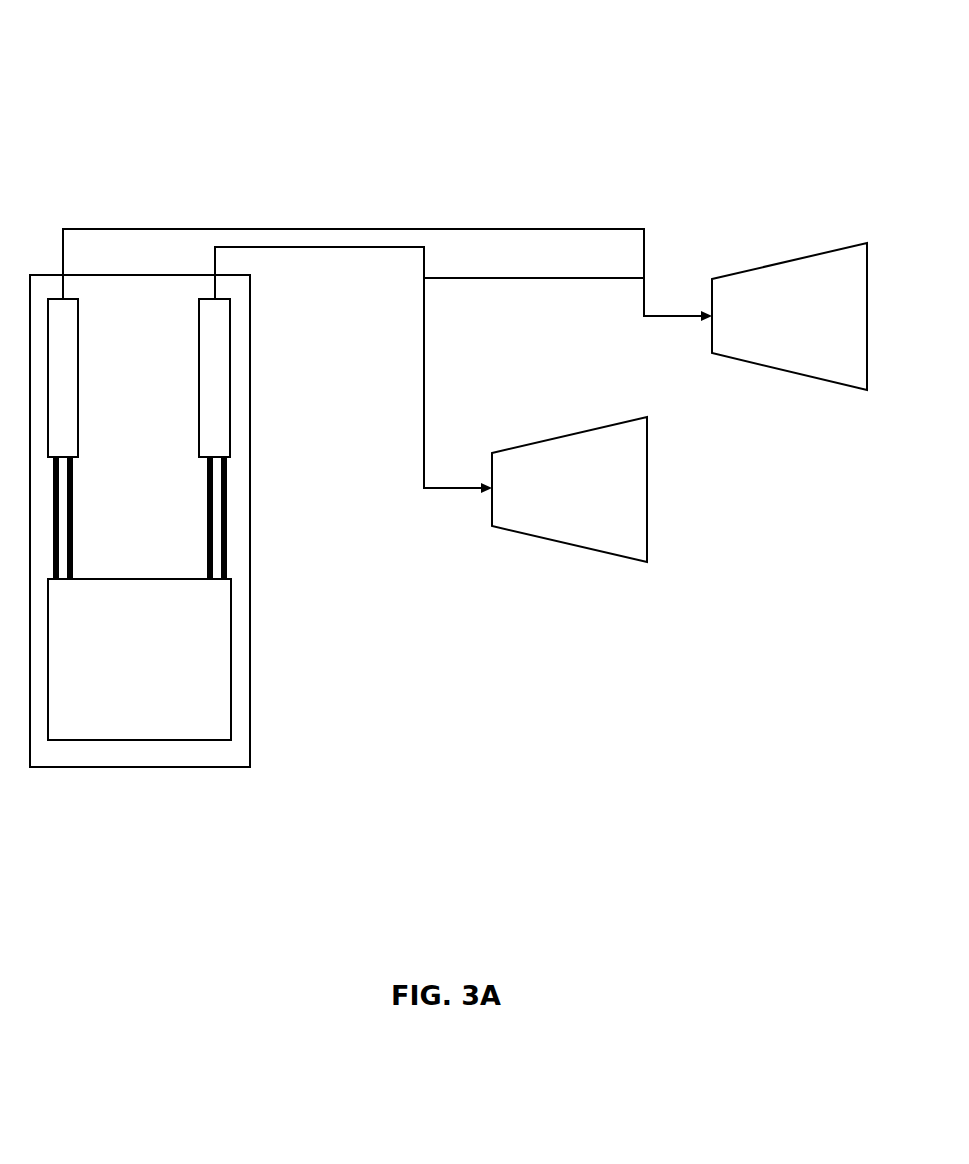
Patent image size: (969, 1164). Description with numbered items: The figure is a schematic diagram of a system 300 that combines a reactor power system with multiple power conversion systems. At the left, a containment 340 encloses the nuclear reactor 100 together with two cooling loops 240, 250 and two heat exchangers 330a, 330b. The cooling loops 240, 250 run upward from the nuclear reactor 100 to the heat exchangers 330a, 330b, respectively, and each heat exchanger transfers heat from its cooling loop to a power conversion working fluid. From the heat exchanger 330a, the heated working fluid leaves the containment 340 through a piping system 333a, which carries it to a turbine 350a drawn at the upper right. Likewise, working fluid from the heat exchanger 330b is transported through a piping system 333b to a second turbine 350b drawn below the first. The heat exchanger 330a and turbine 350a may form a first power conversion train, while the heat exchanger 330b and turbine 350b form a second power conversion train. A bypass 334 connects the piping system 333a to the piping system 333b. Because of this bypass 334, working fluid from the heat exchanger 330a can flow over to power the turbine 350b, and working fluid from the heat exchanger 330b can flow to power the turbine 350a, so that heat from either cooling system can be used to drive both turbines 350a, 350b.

The system 300 is at (192, 67).
The containment 340 is at (250, 560).
The nuclear reactor 100 is at (146, 578).
The heat exchanger 330a is at (80, 372).
The heat exchanger 330b is at (198, 420).
The cooling loop 240 is at (86, 518).
The cooling loop 250 is at (196, 518).
The piping system 333a is at (485, 228).
The piping system 333b is at (423, 327).
The bypass 334 is at (533, 278).
The turbine 350a is at (797, 258).
The turbine 350b is at (573, 433).